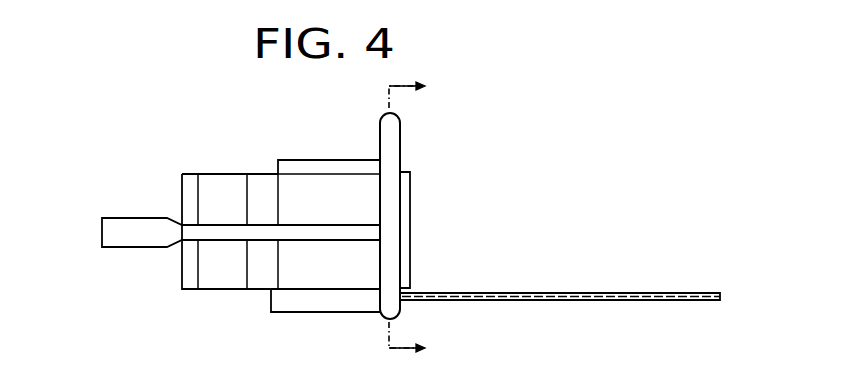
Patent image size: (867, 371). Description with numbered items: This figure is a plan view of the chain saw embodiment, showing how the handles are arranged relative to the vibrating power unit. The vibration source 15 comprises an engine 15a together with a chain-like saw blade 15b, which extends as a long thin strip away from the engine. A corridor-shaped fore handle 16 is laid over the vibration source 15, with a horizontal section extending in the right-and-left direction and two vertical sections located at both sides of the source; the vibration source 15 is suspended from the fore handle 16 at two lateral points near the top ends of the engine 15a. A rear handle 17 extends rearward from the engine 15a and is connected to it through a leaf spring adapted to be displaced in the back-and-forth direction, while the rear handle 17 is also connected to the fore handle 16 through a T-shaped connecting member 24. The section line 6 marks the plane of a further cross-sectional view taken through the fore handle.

The section line 6- 6 is at (395, 218).
The vibration source 15 is at (295, 186).
The engine 15a is at (332, 186).
The chain-like saw blade 15b is at (505, 301).
The fore handle 16 is at (390, 162).
The rear handle 17 is at (118, 232).
The T-shaped connecting member 24 is at (231, 234).